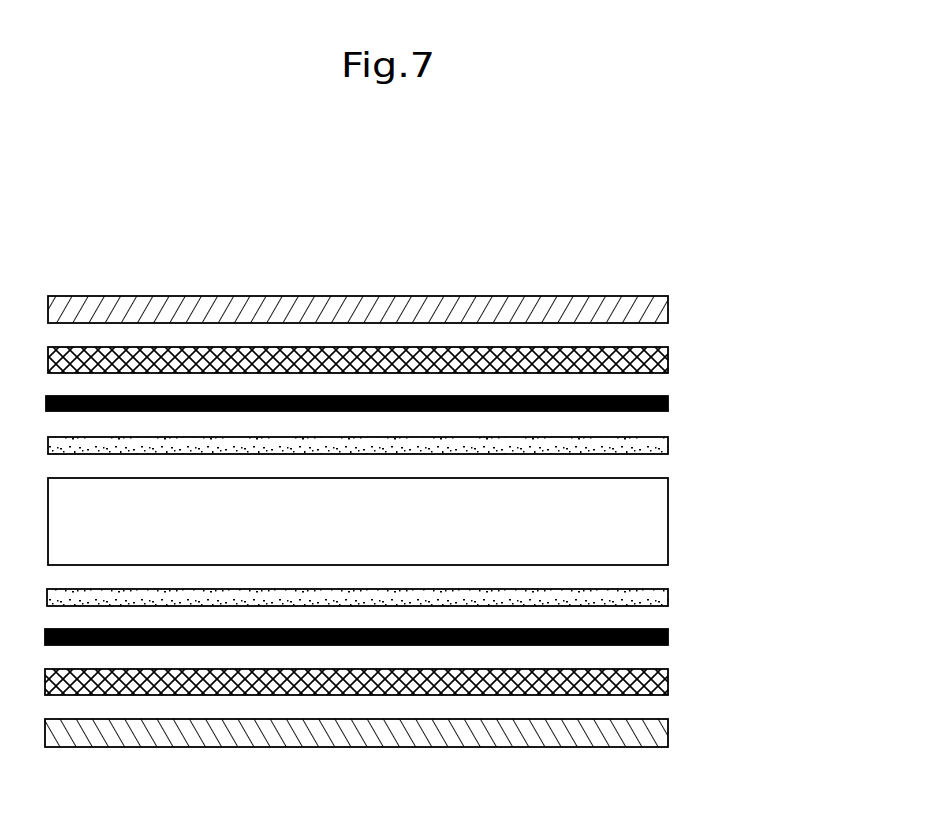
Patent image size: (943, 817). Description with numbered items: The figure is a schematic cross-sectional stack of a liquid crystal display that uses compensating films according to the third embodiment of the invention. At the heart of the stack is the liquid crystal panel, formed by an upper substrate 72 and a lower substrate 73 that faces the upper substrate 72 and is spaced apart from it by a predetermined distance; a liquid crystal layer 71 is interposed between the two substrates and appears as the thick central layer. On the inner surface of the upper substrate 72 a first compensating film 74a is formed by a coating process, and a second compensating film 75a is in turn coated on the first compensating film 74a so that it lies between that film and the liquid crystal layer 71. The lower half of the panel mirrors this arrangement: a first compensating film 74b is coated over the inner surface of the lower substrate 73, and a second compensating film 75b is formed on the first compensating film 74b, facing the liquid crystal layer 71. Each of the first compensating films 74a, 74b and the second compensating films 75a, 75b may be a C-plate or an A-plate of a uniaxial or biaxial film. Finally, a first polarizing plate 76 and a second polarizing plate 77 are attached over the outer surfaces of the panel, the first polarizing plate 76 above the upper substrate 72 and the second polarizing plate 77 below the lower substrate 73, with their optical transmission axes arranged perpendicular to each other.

The first polarizing plate 76 is at (668, 310).
The upper substrate 72 is at (668, 360).
The first compensating film 74a is at (668, 404).
The second compensating film 75a is at (668, 446).
The liquid crystal layer 71 is at (668, 521).
The second compensating film 75b is at (668, 598).
The first compensating film 74b is at (668, 637).
The lower substrate 73 is at (668, 682).
The second polarizing plate 77 is at (668, 733).